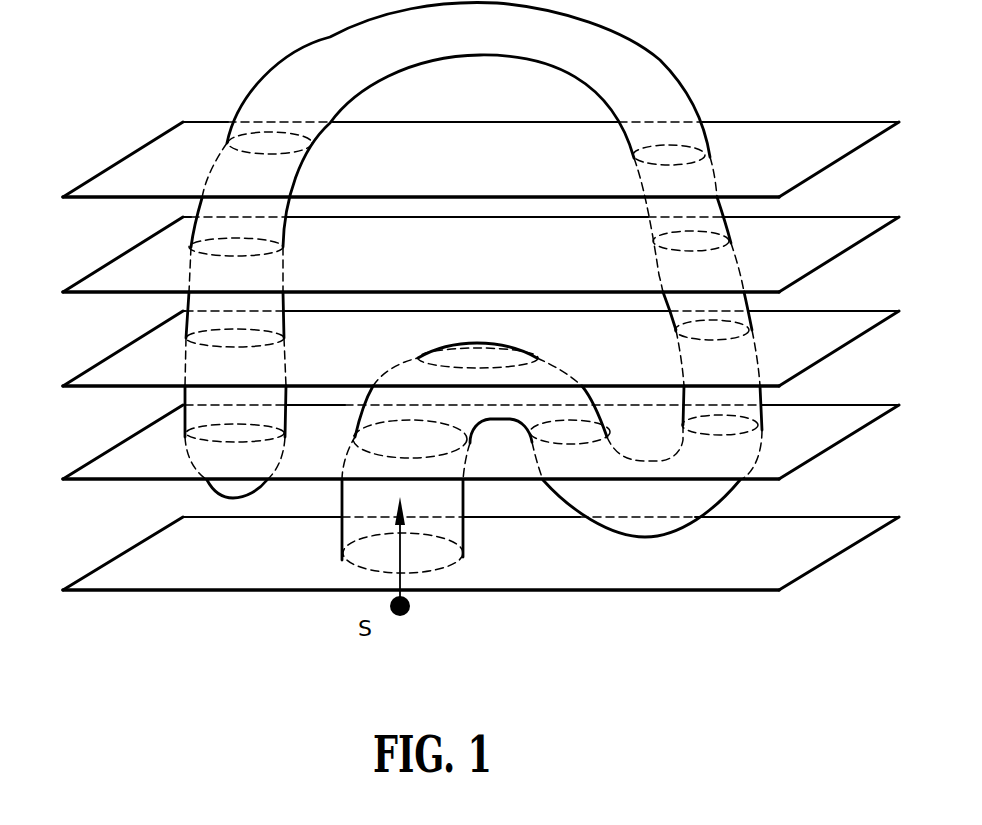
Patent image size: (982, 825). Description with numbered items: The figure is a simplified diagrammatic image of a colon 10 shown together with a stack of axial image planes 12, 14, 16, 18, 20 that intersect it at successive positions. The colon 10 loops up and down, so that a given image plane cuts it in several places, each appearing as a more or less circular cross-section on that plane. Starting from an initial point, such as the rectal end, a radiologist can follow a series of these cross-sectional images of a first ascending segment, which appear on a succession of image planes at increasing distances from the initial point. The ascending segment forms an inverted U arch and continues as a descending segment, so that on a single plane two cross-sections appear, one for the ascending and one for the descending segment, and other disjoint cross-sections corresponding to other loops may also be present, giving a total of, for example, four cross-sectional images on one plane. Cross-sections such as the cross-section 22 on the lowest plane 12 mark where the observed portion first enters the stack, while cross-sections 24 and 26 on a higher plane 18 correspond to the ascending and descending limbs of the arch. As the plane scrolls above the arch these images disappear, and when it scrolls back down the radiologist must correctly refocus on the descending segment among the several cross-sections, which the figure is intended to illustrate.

The tubular fiber tract structure 10 is at (147, 83).
The first slice plane 12 is at (168, 560).
The second slice plane 14 is at (118, 460).
The third slice plane 16 is at (122, 360).
The fourth slice plane 18 is at (123, 268).
The fifth slice plane 20 is at (117, 180).
The cross-section at seed point 22 is at (365, 553).
The left cross-section in plane 18 24 is at (272, 248).
The right cross-section in plane 18 26 is at (699, 247).